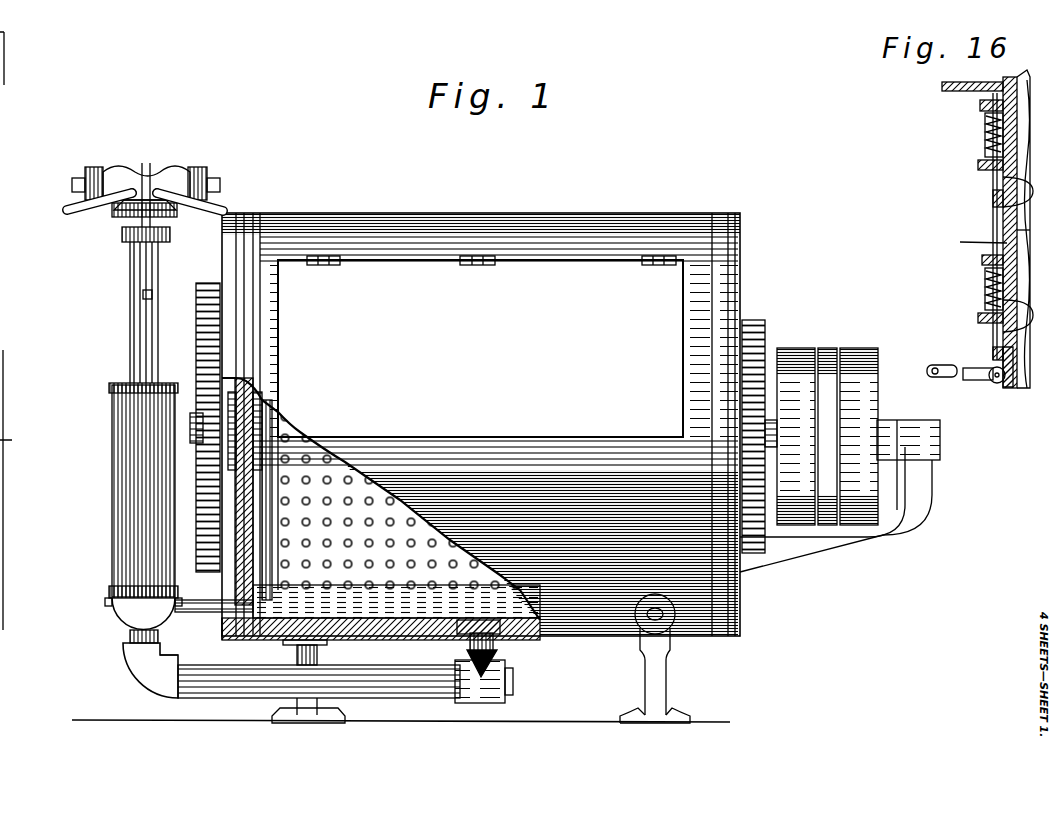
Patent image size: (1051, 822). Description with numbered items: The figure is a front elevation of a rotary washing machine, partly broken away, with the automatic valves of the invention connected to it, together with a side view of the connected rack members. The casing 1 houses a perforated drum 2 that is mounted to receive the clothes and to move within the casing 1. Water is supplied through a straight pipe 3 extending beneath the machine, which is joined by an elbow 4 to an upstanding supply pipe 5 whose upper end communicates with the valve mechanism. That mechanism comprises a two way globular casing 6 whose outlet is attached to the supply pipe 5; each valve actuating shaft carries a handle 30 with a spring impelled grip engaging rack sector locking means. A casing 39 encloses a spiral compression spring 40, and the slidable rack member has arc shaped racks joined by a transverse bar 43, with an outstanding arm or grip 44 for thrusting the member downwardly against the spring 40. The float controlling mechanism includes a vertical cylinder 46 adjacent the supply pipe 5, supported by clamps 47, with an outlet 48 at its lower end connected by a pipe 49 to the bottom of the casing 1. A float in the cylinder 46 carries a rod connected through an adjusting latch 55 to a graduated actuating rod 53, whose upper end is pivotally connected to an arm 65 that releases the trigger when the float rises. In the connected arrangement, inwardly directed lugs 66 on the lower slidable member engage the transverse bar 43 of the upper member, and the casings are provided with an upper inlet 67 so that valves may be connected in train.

In FIG. 1, the casing 1 is at (718, 348).
In FIG. 1, the perforated drum 2 is at (403, 545).
In FIG. 1, the pipe 3 is at (357, 700).
In FIG. 1, the elbow 4 is at (148, 660).
In FIG. 1, the supply pipe 5 is at (133, 342).
In FIG. 1, the casing 6 is at (168, 180).
In FIG. 16, the casing 6 is at (995, 205).
In FIG. 1, the handle 30 is at (222, 212).
In FIG. 16, the casing 39 is at (982, 133).
In FIG. 16, the spiral compression spring 40 is at (983, 157).
In FIG. 16, the transverse bar 43 is at (1000, 200).
In FIG. 16, the arm or grip 44 is at (960, 90).
In FIG. 1, the cylinder 46 is at (138, 490).
In FIG. 1, the clamps 47 is at (140, 388).
In FIG. 1, the outlet 48 is at (172, 612).
In FIG. 1, the pipe 49 is at (208, 620).
In FIG. 1, the graduated actuating rod 53 is at (147, 273).
In FIG. 1, the adjusting latch 55 is at (160, 296).
In FIG. 16, the arm 65 is at (963, 380).
In FIG. 16, the lugs 66 is at (1007, 190).
In FIG. 16, the upper inlet 67 is at (972, 243).